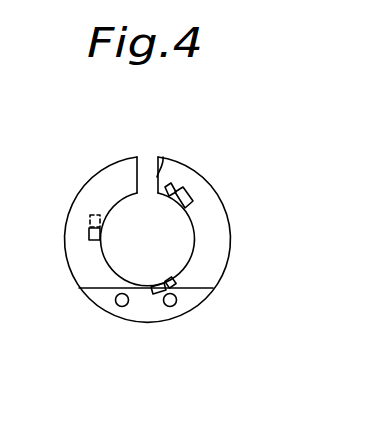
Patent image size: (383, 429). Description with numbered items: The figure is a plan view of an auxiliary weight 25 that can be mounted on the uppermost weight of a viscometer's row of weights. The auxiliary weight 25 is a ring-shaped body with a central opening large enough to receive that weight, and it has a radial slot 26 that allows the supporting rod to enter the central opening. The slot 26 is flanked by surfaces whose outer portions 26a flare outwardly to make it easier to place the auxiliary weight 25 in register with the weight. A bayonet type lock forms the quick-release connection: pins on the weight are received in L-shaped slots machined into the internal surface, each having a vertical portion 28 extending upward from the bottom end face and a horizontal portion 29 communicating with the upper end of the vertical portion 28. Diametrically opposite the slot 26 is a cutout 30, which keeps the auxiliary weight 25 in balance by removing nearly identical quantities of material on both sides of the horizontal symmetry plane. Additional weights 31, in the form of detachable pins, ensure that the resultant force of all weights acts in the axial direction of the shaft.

The auxiliary weight 25 is at (206, 208).
The radial slot 26 is at (148, 181).
The outer portions of slot-flanking surfaces 26a is at (137, 157).
The vertical portions of L-shaped slots 28 is at (176, 189).
The horizontal portions of L-shaped slots 29 is at (88, 214).
The cutout 30 is at (105, 302).
The additional weights 31 is at (168, 308).